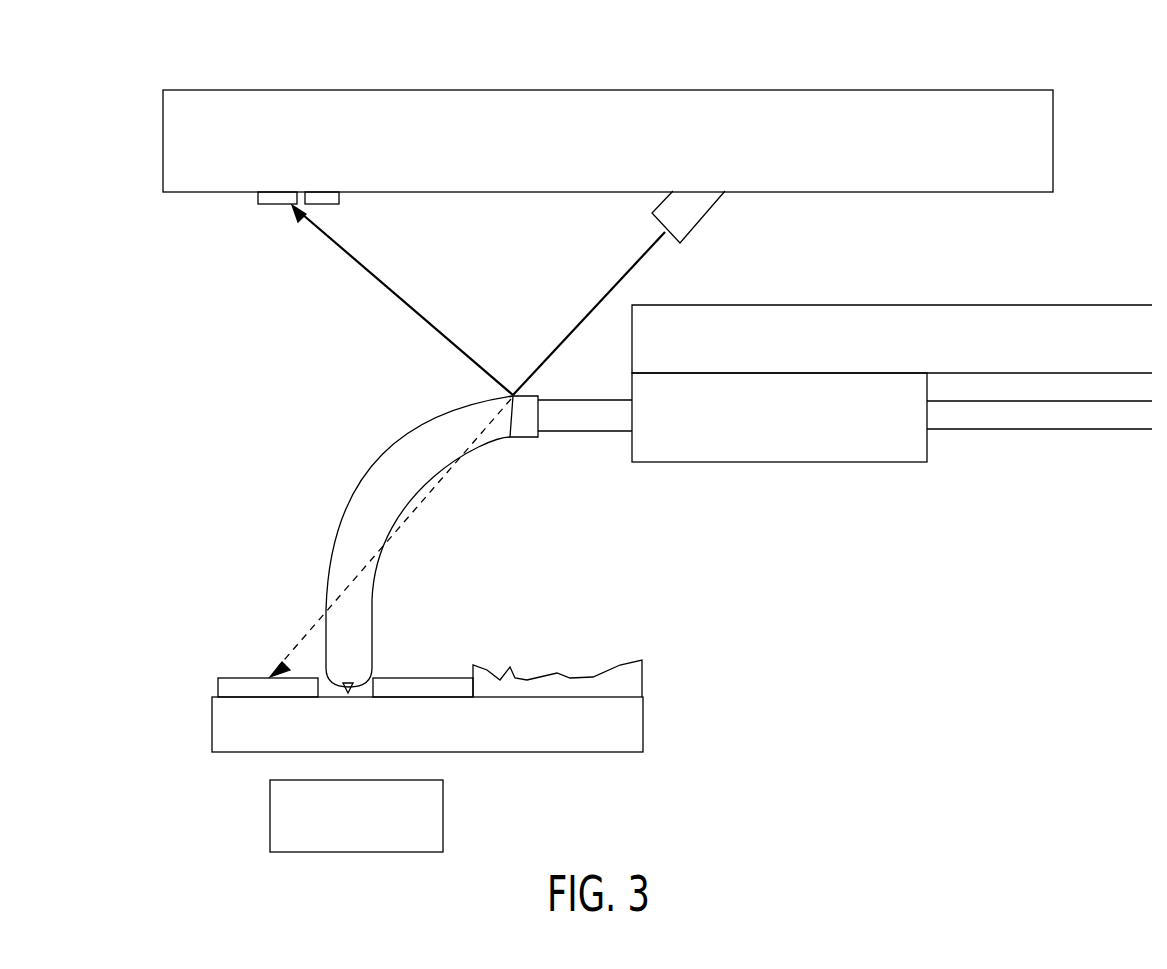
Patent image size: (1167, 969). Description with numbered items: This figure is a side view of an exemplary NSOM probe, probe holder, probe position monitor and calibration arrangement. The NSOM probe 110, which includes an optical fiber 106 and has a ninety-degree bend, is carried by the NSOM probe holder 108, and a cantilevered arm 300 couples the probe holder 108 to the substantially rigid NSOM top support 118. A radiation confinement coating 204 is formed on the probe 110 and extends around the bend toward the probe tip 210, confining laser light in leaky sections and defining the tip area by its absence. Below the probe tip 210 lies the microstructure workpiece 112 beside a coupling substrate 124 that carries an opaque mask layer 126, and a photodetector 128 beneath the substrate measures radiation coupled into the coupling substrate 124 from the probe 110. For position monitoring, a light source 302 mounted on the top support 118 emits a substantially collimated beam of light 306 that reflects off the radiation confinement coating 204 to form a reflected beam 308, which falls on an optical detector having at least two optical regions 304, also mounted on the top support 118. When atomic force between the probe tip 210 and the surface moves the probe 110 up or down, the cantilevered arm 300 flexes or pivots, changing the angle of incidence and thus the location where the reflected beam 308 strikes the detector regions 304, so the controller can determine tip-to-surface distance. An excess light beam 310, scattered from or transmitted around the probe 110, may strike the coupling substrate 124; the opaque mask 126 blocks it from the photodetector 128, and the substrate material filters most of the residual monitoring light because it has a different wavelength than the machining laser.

The NSOM top support 118 is at (1057, 127).
The optical regions 304 is at (320, 197).
The light source 302 is at (695, 202).
The reflected beam 308 is at (357, 265).
The substantially collimated beam of light 306 is at (603, 297).
The cantilevered arm 300 is at (1085, 304).
The NSOM probe holder 108 is at (810, 462).
The optical fiber 106 is at (1058, 430).
The radiation confinement coating 204 is at (505, 440).
The NSOM probe 110 is at (327, 427).
The probe tip 210 is at (374, 683).
The excess light beam 310 is at (297, 647).
The opaque mask layer 126 is at (218, 690).
The workpiece 112 is at (642, 678).
The coupling substrate 124 is at (643, 735).
The photodetector 128 is at (443, 812).